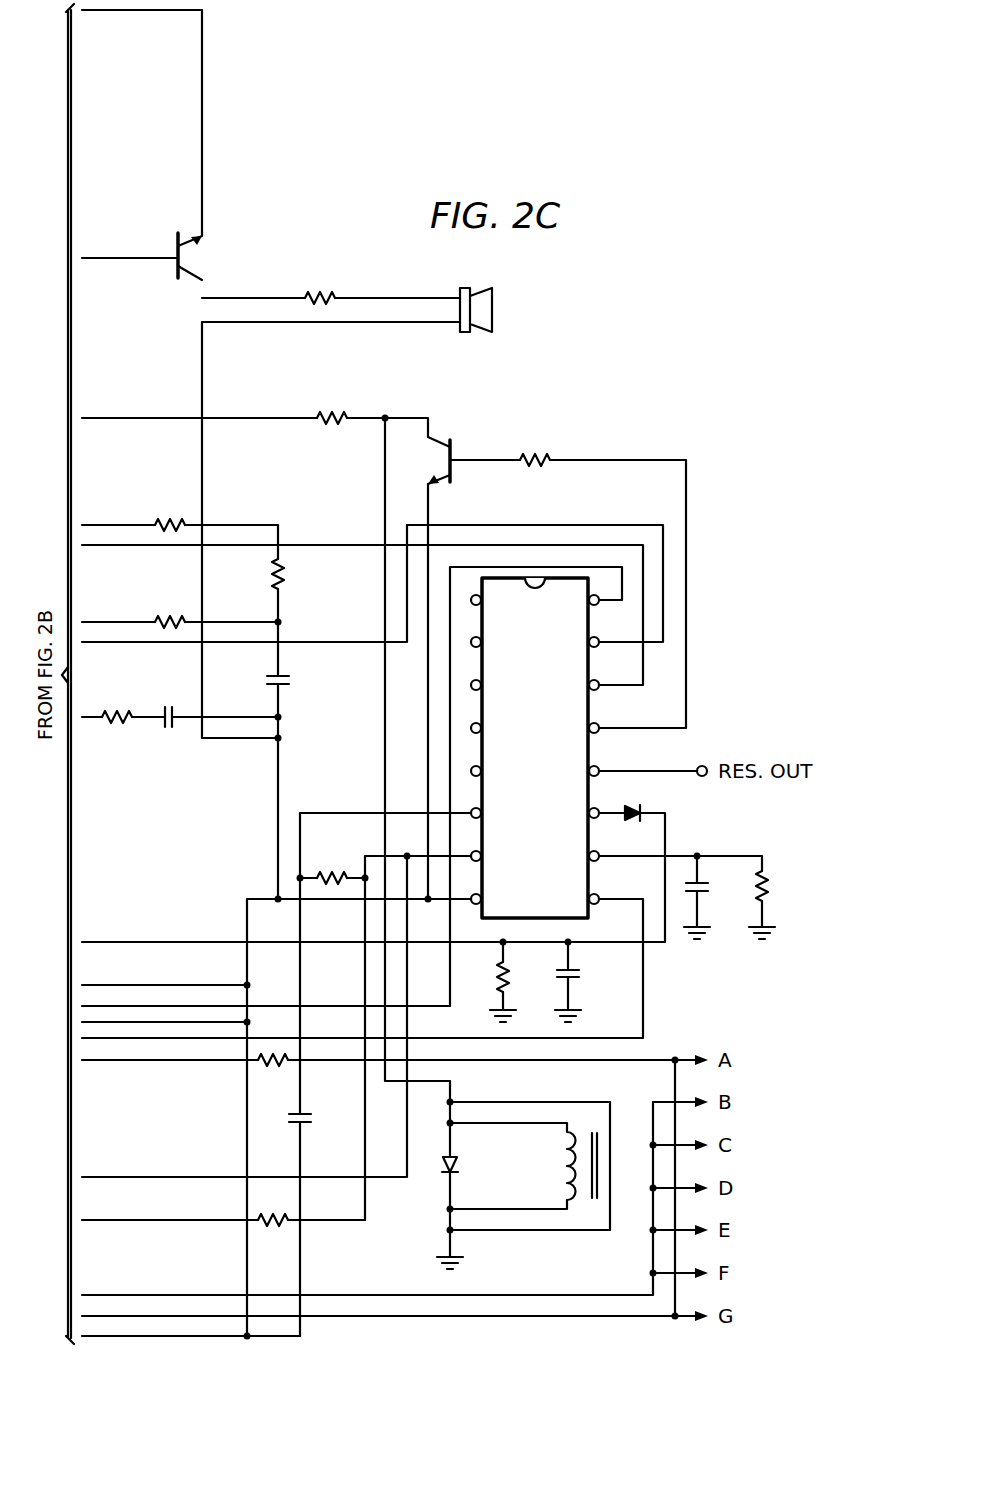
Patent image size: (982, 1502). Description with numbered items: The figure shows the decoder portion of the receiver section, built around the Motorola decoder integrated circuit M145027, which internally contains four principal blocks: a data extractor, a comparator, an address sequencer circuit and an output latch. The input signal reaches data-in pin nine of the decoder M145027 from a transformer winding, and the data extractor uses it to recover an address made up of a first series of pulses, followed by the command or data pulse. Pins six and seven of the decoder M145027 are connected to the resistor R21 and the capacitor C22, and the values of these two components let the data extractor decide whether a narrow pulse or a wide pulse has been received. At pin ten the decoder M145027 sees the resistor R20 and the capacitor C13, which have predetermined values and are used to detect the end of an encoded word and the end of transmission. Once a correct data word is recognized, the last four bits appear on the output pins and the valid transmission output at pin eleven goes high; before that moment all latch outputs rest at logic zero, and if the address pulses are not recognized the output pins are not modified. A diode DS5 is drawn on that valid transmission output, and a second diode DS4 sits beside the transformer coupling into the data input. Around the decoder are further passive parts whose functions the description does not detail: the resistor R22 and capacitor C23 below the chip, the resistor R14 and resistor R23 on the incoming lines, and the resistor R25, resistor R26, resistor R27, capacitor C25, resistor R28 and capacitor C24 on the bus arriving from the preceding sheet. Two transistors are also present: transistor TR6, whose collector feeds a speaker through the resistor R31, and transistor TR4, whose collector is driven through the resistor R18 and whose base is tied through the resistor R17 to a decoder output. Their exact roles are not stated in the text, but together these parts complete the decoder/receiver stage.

The transistor TR6 is at (197, 259).
The resistor R31 is at (322, 288).
The resistor R18 is at (334, 408).
The transistor TR4 is at (437, 463).
The resistor R17 is at (537, 449).
The resistor R25 is at (169, 514).
The resistor R26 is at (299, 574).
The resistor R27 is at (169, 611).
The capacitor C25 is at (300, 681).
The resistor R28 is at (115, 706).
The capacitor C24 is at (169, 705).
The decoder M145027 is at (535, 748).
The diode DS5 is at (634, 802).
The resistor R21 is at (332, 866).
The capacitor C13 is at (718, 887).
The resistor R20 is at (783, 886).
The resistor R22 is at (524, 977).
The capacitor C23 is at (589, 978).
The resistor R14 is at (272, 1073).
The capacitor C22 is at (320, 1123).
The diode DS4 is at (471, 1168).
The resistor R23 is at (272, 1209).